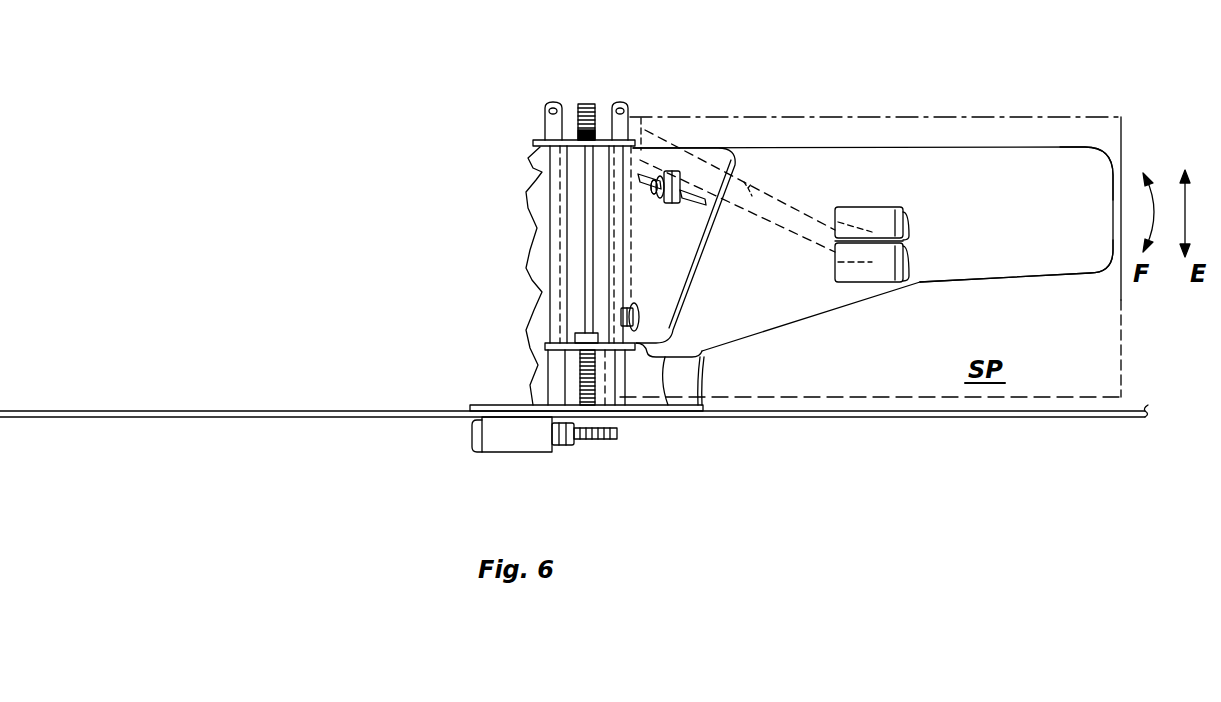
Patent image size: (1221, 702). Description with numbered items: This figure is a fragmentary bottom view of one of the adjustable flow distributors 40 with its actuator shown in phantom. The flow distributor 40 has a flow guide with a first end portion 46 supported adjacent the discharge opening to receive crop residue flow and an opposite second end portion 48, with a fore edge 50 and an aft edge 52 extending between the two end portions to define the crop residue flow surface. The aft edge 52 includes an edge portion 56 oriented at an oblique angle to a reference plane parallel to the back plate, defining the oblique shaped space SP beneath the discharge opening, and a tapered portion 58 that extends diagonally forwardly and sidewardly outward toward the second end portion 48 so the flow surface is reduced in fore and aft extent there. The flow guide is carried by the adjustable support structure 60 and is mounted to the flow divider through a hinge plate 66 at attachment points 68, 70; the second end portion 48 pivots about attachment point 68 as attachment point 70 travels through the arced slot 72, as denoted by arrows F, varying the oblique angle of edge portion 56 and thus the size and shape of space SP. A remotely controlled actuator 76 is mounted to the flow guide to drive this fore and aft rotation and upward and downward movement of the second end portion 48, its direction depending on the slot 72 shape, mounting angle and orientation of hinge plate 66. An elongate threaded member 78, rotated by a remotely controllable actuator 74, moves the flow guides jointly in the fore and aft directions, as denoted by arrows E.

The adjustable flow distributor 40 is at (1095, 178).
The first end portion 46 is at (666, 382).
The second end portion 48 is at (1106, 148).
The fore edge 50 is at (857, 147).
The aft edge 52 is at (1030, 280).
The edge portion 56 is at (920, 283).
The tapered portion 58 is at (793, 325).
The adjustable support structure 60 is at (722, 293).
The hinge plate 66 is at (693, 260).
The attachment point 68 is at (643, 310).
The attachment point 70 is at (690, 180).
The arced slot 72 is at (690, 180).
The remotely controllable actuator 74 is at (477, 452).
The remotely controlled actuator 76 is at (788, 203).
The elongate threaded member 78 is at (585, 104).